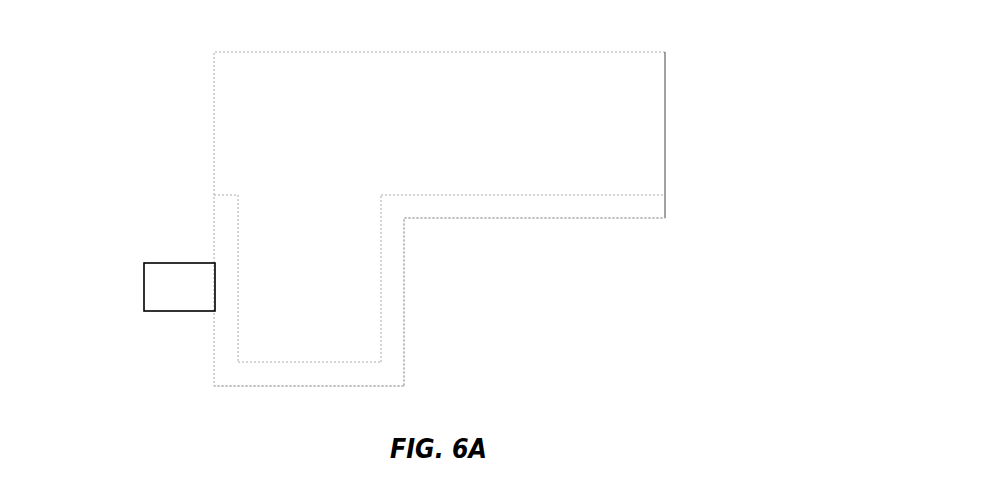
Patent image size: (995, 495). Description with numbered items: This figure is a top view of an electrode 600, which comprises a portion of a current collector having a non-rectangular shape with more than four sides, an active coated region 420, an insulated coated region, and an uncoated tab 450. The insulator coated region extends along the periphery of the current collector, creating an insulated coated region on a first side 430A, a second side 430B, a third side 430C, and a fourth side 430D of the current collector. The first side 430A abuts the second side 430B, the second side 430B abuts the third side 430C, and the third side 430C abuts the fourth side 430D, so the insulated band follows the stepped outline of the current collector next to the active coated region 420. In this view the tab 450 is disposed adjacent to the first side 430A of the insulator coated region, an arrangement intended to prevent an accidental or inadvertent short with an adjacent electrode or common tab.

The electrode 600 is at (120, 30).
The active coated region 420 is at (663, 137).
The first side of the insulator coated region 430A is at (223, 231).
The second side of the insulator coated region 430B is at (282, 375).
The third side of the insulator coated region 430C is at (393, 281).
The fourth side of the insulator coated region 430D is at (618, 210).
The tab 450 is at (144, 284).